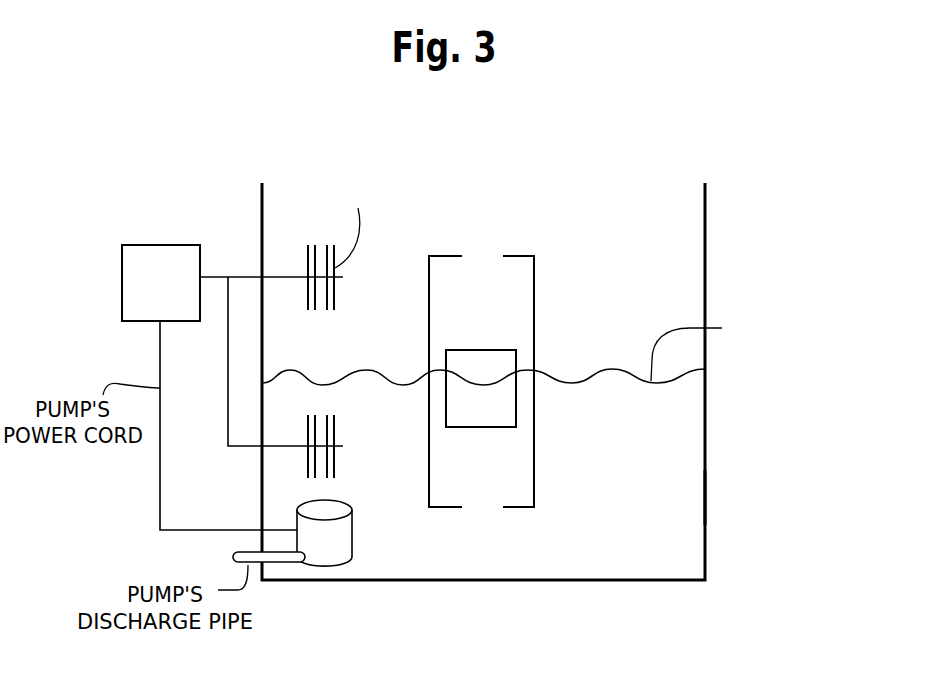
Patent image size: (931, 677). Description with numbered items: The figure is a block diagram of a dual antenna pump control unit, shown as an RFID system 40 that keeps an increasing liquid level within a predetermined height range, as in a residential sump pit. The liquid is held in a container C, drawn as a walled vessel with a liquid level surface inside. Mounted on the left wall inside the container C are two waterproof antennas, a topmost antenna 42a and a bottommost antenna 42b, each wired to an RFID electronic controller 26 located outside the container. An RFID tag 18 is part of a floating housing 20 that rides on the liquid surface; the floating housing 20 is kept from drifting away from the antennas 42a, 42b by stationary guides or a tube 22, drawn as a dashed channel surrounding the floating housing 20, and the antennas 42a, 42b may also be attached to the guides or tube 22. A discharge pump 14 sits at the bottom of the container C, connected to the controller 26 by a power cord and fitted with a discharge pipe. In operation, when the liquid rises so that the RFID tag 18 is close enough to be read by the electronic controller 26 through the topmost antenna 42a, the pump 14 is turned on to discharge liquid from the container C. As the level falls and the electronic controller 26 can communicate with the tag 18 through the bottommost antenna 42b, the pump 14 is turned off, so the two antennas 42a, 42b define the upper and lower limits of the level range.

The RFID system 40 is at (705, 143).
The RFID electronic controller 26 is at (122, 266).
The topmost antenna 42a is at (298, 305).
The bottommost antenna 42b is at (323, 406).
The RFID tag 18 is at (496, 356).
The floating housing 20 is at (500, 427).
The container C is at (705, 482).
The discharge pump 14 is at (328, 555).
The guides or tube 22 is at (545, 479).